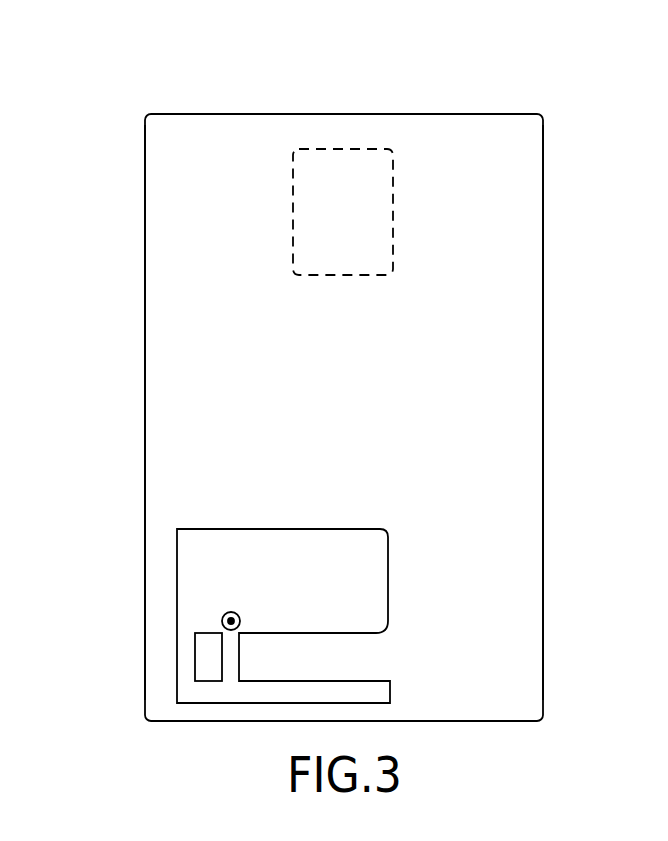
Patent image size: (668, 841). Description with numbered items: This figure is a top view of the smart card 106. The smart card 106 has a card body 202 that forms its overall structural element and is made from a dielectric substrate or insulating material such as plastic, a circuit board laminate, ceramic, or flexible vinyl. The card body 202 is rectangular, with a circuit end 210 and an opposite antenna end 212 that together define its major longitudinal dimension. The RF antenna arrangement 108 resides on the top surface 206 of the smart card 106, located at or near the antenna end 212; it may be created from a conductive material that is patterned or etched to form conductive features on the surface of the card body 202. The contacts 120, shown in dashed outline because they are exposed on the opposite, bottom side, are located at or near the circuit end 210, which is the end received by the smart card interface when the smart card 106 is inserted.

The smart card 106 is at (190, 93).
The RF antenna arrangement 108 is at (395, 530).
The contacts 120 is at (393, 181).
The card body 202 is at (183, 351).
The top surface 206 is at (245, 412).
The circuit end 210 is at (130, 132).
The antenna end 212 is at (562, 684).